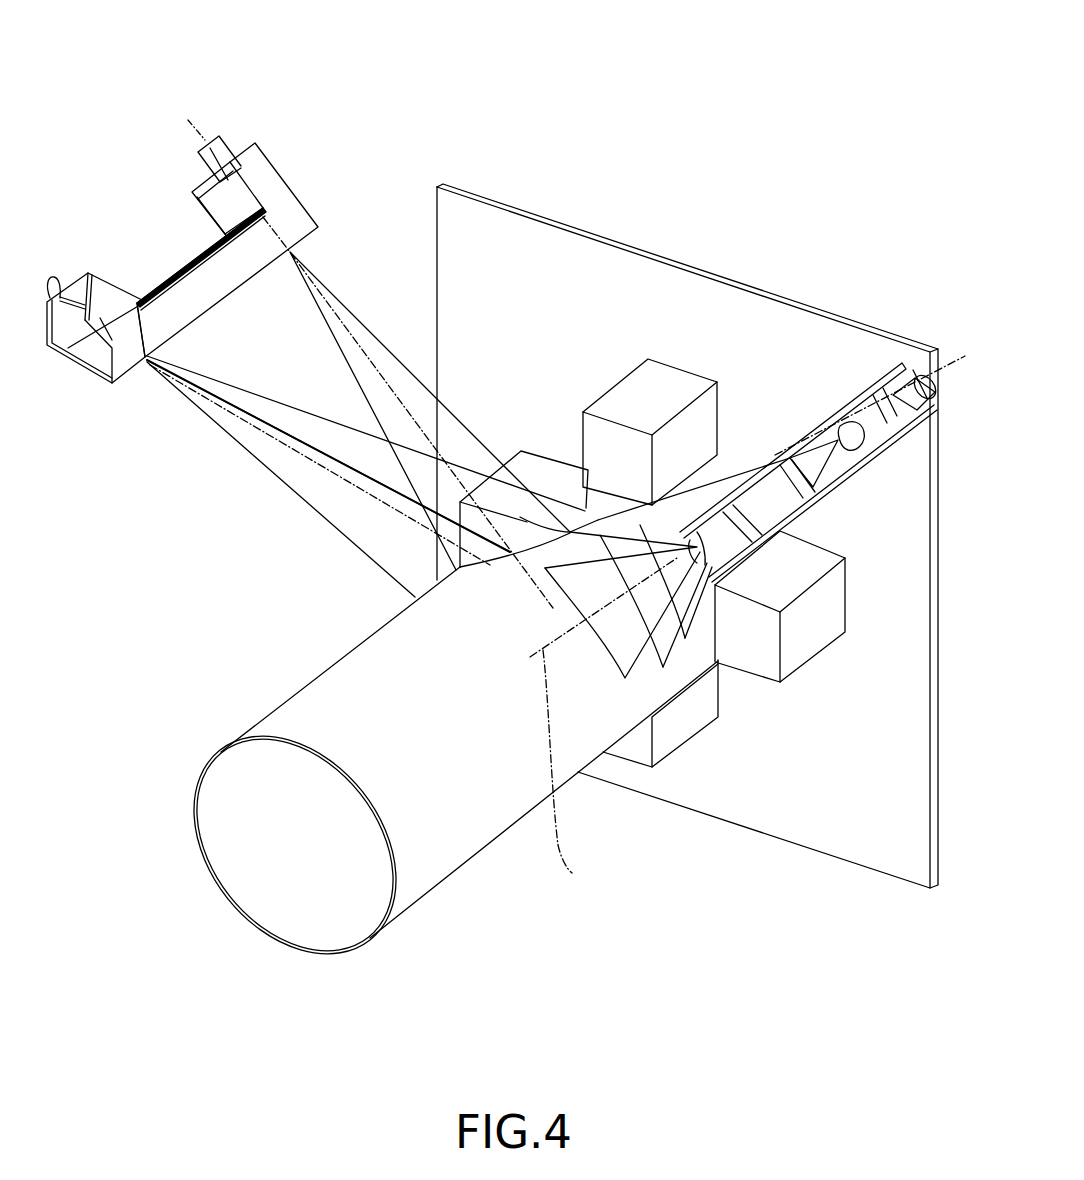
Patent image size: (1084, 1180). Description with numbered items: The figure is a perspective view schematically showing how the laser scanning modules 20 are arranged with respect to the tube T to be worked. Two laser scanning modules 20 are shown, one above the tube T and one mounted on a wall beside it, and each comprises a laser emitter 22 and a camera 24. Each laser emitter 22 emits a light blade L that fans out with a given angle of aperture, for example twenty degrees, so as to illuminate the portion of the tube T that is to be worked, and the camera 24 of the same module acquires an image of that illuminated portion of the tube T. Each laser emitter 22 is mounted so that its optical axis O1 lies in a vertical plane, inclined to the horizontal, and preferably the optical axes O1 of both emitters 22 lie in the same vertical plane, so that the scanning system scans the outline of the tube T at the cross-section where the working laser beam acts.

The laser scanning module 20 is at (506, 309).
The laser emitter 22 is at (228, 147).
The camera 24 is at (137, 360).
The light blade L is at (388, 347).
The optical axis of the laser emitter O1 is at (330, 298).
The tube T is at (197, 793).